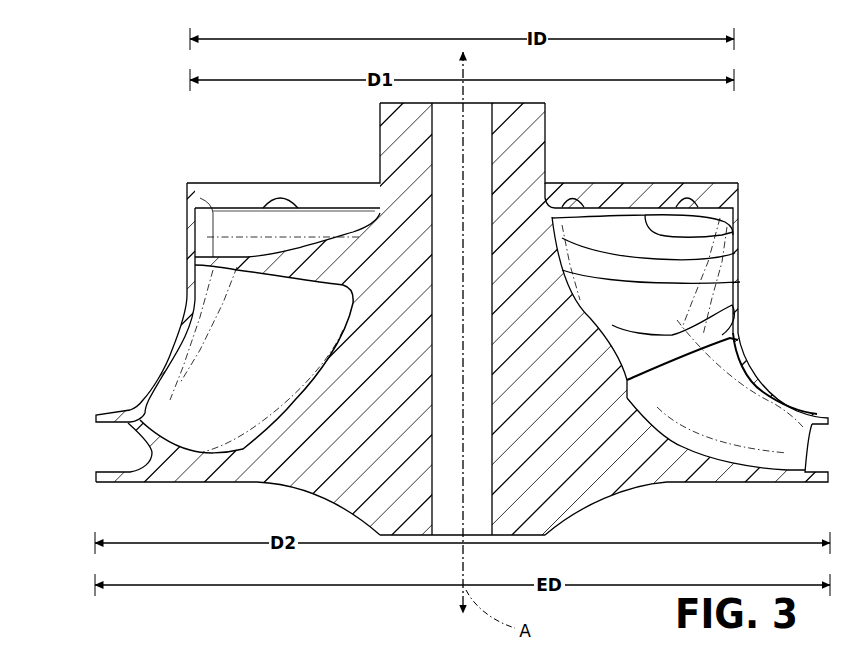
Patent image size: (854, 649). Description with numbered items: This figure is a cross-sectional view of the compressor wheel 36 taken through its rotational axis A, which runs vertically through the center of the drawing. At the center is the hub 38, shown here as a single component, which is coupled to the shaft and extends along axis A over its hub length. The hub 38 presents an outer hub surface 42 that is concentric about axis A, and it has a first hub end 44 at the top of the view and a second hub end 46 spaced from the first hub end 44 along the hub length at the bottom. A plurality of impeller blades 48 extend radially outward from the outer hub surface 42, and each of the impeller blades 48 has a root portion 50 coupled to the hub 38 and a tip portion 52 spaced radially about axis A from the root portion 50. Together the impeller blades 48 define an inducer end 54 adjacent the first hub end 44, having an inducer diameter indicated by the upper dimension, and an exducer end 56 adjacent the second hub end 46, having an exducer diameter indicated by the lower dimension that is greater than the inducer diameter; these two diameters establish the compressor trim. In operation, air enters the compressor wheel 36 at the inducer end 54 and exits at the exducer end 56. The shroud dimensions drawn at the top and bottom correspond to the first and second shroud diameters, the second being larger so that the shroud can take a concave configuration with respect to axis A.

The compressor wheel 36 is at (113, 117).
The hub 38 is at (514, 127).
The outer hub surface 42 is at (720, 287).
The first hub end 44 is at (362, 148).
The second hub end 46 is at (310, 512).
The impeller blades 48 is at (280, 267).
The root portion 50 is at (333, 273).
The tip portion 52 is at (190, 257).
The inducer end 54 is at (175, 172).
The exducer end 56 is at (90, 463).